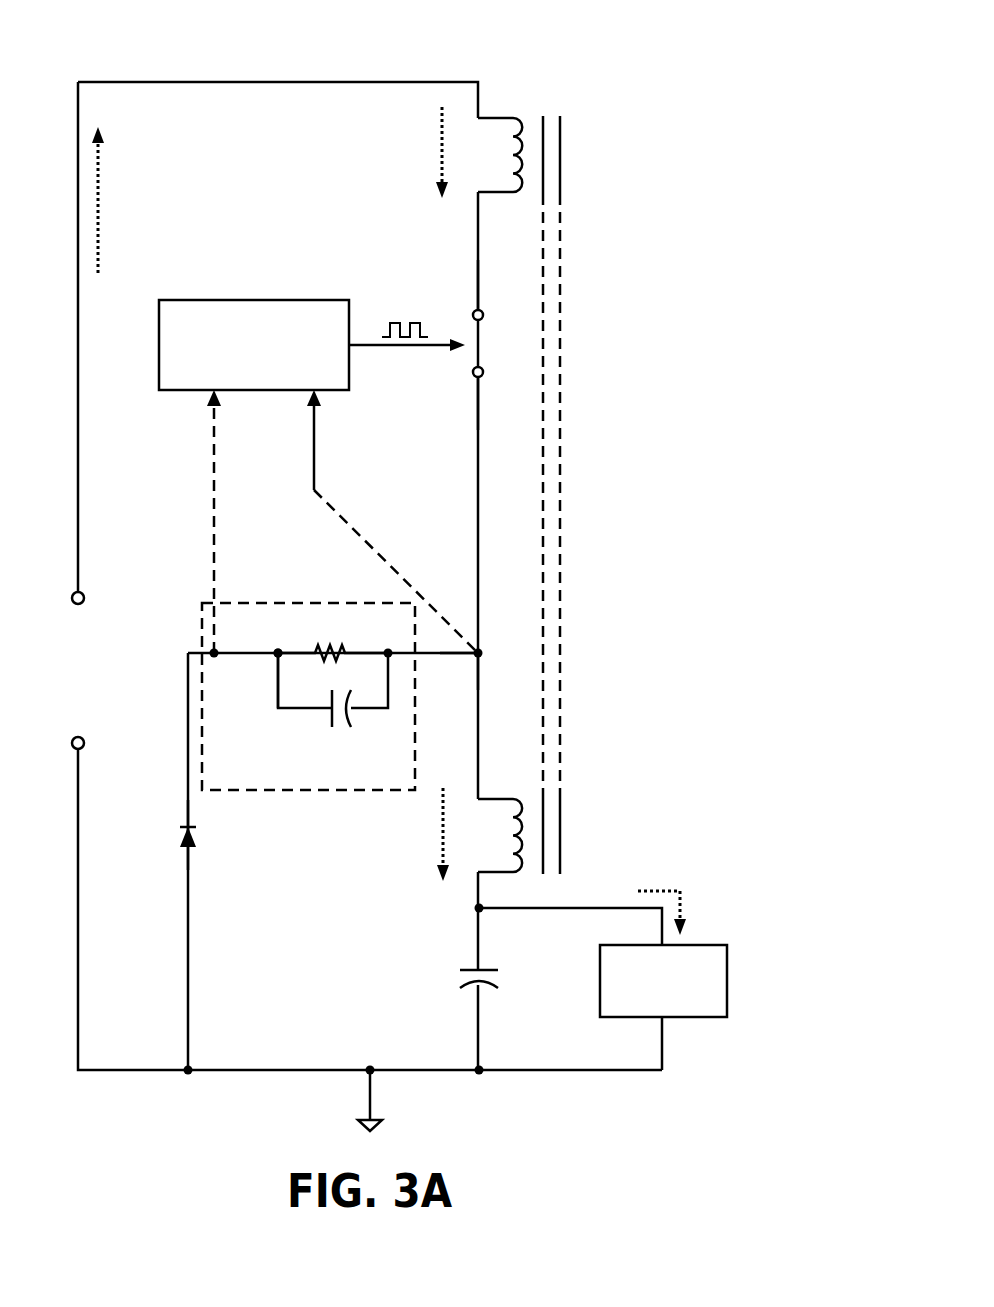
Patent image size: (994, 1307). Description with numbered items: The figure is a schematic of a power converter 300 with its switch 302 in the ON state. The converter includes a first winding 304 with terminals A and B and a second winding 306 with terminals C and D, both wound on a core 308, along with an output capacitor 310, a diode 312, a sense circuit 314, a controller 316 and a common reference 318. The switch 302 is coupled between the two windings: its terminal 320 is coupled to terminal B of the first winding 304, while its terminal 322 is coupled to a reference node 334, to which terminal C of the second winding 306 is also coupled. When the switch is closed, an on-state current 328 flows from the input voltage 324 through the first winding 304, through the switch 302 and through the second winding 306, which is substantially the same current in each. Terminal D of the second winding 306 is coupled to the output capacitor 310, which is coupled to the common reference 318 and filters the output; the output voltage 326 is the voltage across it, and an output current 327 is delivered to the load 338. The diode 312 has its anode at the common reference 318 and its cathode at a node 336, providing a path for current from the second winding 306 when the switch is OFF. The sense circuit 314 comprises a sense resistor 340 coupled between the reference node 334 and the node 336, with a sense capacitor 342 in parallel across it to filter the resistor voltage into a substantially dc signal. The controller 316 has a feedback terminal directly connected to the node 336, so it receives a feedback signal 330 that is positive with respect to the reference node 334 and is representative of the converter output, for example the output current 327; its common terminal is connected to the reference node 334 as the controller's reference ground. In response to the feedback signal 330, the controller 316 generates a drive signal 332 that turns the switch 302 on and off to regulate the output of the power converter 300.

The power converter 300 is at (737, 71).
The switch S1 302 is at (497, 330).
The first winding 304 is at (520, 110).
The second winding 306 is at (522, 785).
The core 308 is at (572, 157).
The output capacitor C_O 310 is at (407, 968).
The diode D1 312 is at (158, 825).
The sense circuit 314 is at (263, 797).
The controller 316 is at (236, 372).
The common reference 318 is at (380, 1105).
The terminal 320 is at (470, 290).
The terminal 322 is at (485, 383).
The input voltage V_IN 324 is at (102, 667).
The output voltage V_O 326 is at (555, 970).
The output current I_O 327 is at (727, 902).
The current I_ON 328 is at (155, 190).
The feedback signal 330 is at (212, 528).
The drive signal 332 is at (397, 312).
The reference node 334 is at (483, 645).
The node 336 is at (268, 663).
The load 338 is at (644, 1006).
The sense resistor R_SENSE 340 is at (340, 613).
The sense capacitor C_S 342 is at (378, 530).